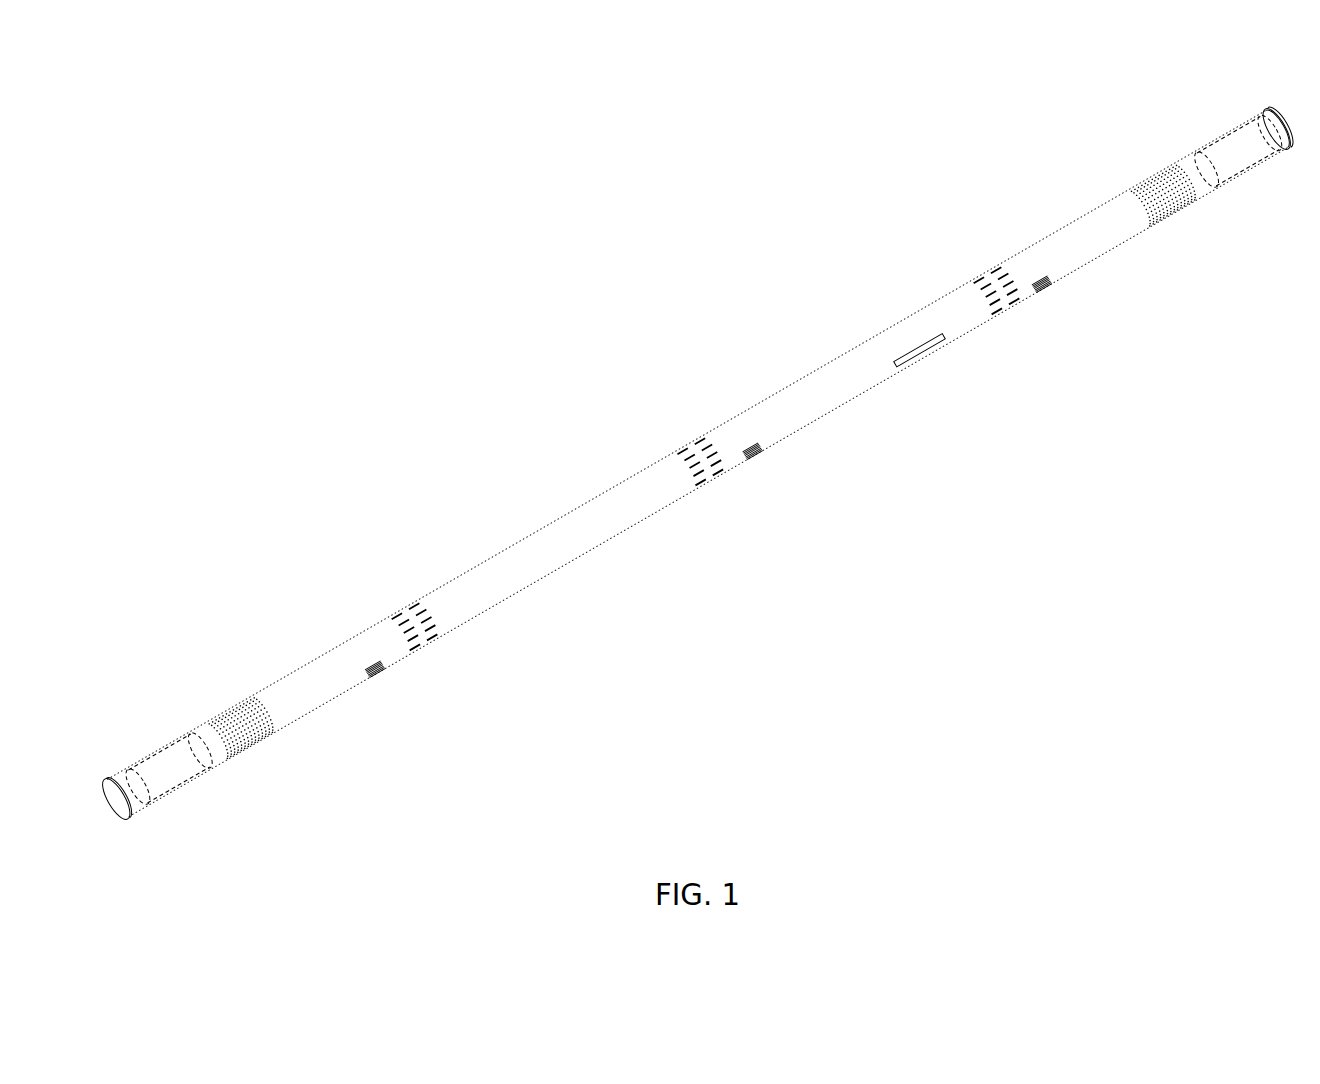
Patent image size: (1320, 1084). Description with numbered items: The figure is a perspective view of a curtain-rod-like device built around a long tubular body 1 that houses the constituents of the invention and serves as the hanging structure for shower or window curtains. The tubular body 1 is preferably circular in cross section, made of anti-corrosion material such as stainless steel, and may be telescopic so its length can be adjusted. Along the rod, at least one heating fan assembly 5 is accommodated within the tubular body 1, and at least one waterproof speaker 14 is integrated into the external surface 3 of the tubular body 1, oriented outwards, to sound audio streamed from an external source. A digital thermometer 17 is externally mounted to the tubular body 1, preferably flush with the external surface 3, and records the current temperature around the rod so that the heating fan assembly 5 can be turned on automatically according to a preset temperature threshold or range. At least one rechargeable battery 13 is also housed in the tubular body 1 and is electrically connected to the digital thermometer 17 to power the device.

The tubular body 1 is at (697, 457).
The external surface 3 is at (867, 353).
The heating fan assembly 5 is at (415, 687).
The rechargeable battery 13 is at (168, 779).
The waterproof speaker 14 is at (266, 773).
The digital thermometer 17 is at (925, 345).